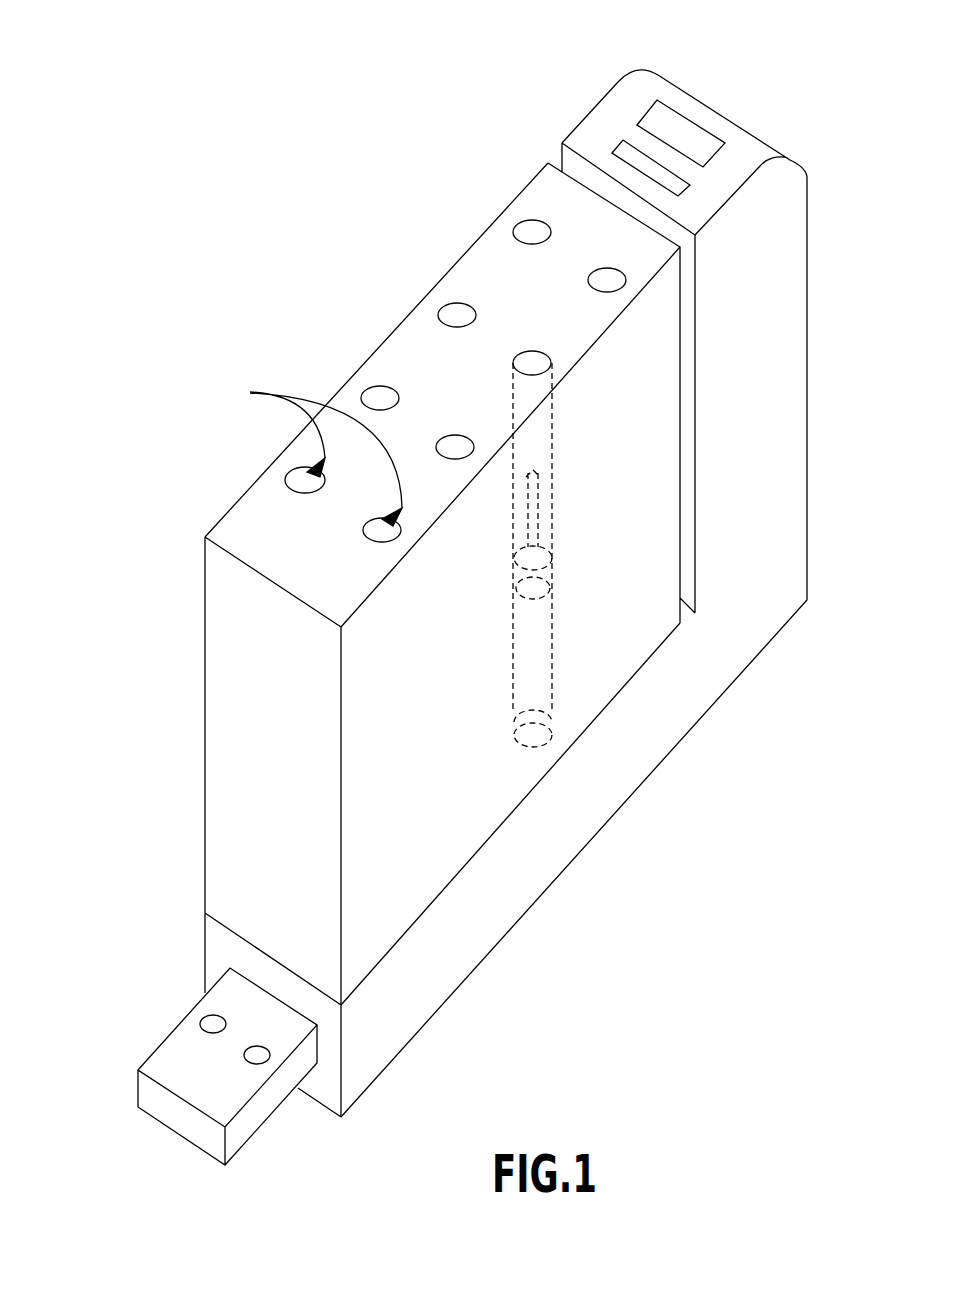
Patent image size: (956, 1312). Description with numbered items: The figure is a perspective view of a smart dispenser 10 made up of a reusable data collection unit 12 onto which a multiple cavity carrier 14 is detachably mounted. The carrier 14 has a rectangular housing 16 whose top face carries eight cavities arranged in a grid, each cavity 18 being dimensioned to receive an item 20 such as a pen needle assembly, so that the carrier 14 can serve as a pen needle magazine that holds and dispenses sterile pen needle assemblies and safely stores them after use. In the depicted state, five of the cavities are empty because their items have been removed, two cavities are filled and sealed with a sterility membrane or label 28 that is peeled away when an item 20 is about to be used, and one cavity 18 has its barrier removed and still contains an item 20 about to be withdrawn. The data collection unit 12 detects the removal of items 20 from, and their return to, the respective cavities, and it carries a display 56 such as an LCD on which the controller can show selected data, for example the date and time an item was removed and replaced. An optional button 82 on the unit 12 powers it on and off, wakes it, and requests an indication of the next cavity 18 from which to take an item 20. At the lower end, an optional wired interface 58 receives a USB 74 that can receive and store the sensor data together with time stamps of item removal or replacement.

The smart dispenser 10 is at (212, 189).
The data collection unit 12 is at (773, 548).
The multiple cavity carrier 14 is at (283, 754).
The housing 16 is at (318, 402).
The cavity 18 is at (547, 437).
The item 20 is at (548, 583).
The sterility membrane or label 28 is at (309, 453).
The display 56 is at (688, 136).
The wired interface 58 is at (277, 1000).
The USB 74 is at (124, 1001).
The button 82 is at (632, 157).